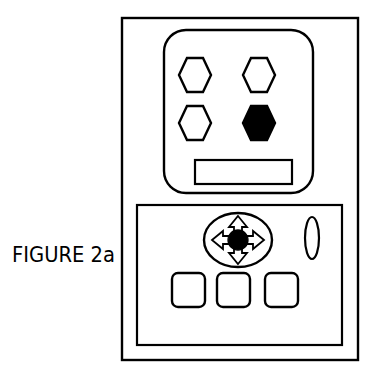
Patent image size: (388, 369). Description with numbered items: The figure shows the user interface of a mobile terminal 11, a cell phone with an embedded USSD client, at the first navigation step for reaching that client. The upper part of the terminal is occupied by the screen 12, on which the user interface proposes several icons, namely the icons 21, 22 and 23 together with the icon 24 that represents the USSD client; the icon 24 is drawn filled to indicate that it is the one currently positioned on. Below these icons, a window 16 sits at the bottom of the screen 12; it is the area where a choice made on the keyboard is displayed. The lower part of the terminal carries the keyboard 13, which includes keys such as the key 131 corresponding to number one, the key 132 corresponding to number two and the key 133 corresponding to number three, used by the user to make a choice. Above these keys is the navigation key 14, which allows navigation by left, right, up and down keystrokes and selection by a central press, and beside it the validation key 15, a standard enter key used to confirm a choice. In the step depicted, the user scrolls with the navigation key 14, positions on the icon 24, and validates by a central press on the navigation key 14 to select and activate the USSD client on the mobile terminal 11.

The mobile terminal 11 is at (122, 185).
The screen 12 is at (314, 132).
The keyboard 13 is at (305, 203).
The navigation key 14 is at (206, 226).
The validation key 15 is at (318, 244).
The window 16 is at (240, 161).
The icon 21 is at (207, 88).
The icon 22 is at (268, 60).
The icon 23 is at (209, 133).
The USSD client icon 24 is at (270, 135).
The key 131 is at (188, 308).
The key 132 is at (235, 308).
The key 133 is at (298, 292).